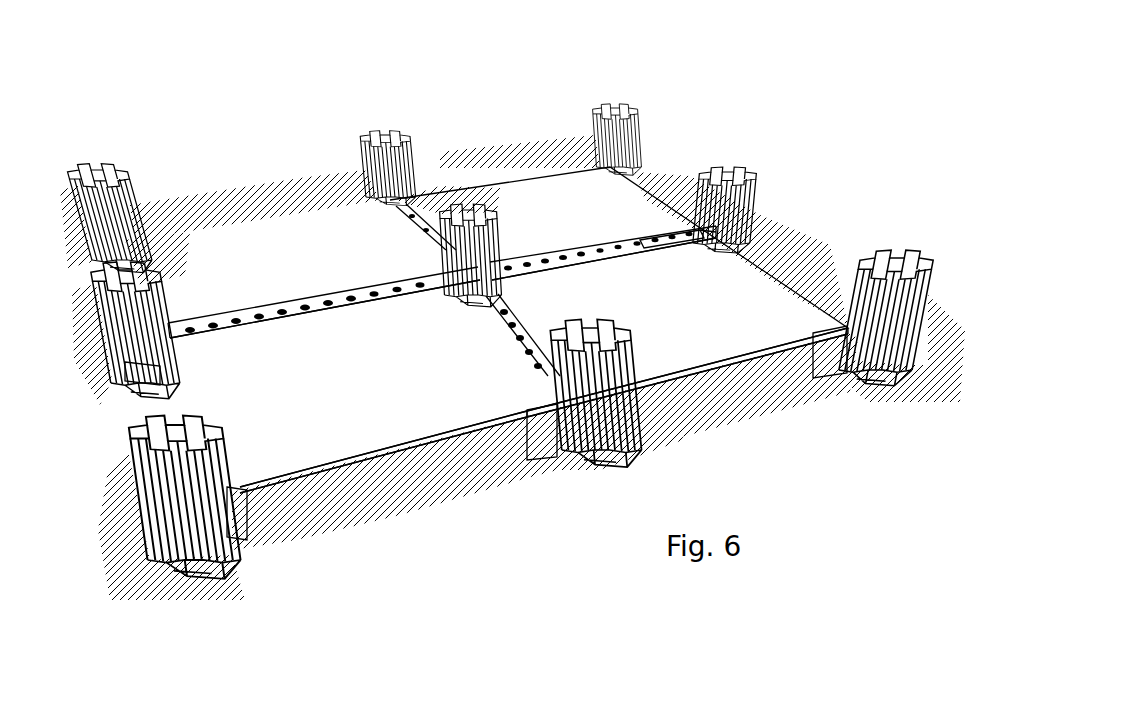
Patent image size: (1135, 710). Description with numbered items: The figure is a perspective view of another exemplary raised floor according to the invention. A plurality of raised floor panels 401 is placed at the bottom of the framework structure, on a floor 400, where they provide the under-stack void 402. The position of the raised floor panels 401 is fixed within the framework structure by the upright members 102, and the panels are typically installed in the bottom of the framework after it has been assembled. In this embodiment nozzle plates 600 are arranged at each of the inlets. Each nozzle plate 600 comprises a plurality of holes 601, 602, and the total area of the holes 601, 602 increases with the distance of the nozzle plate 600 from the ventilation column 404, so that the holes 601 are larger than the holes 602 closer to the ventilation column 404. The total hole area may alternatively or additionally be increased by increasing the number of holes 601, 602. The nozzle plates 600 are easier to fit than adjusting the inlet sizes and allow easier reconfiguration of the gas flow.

The upright members 102 is at (398, 146).
The floor 400 is at (273, 559).
The raised floor panels 401 is at (372, 451).
The under-stack void 402 is at (462, 448).
The ventilation column 404 is at (662, 85).
The nozzle plates 600 is at (683, 223).
The holes 601 is at (262, 298).
The holes 602 is at (543, 246).